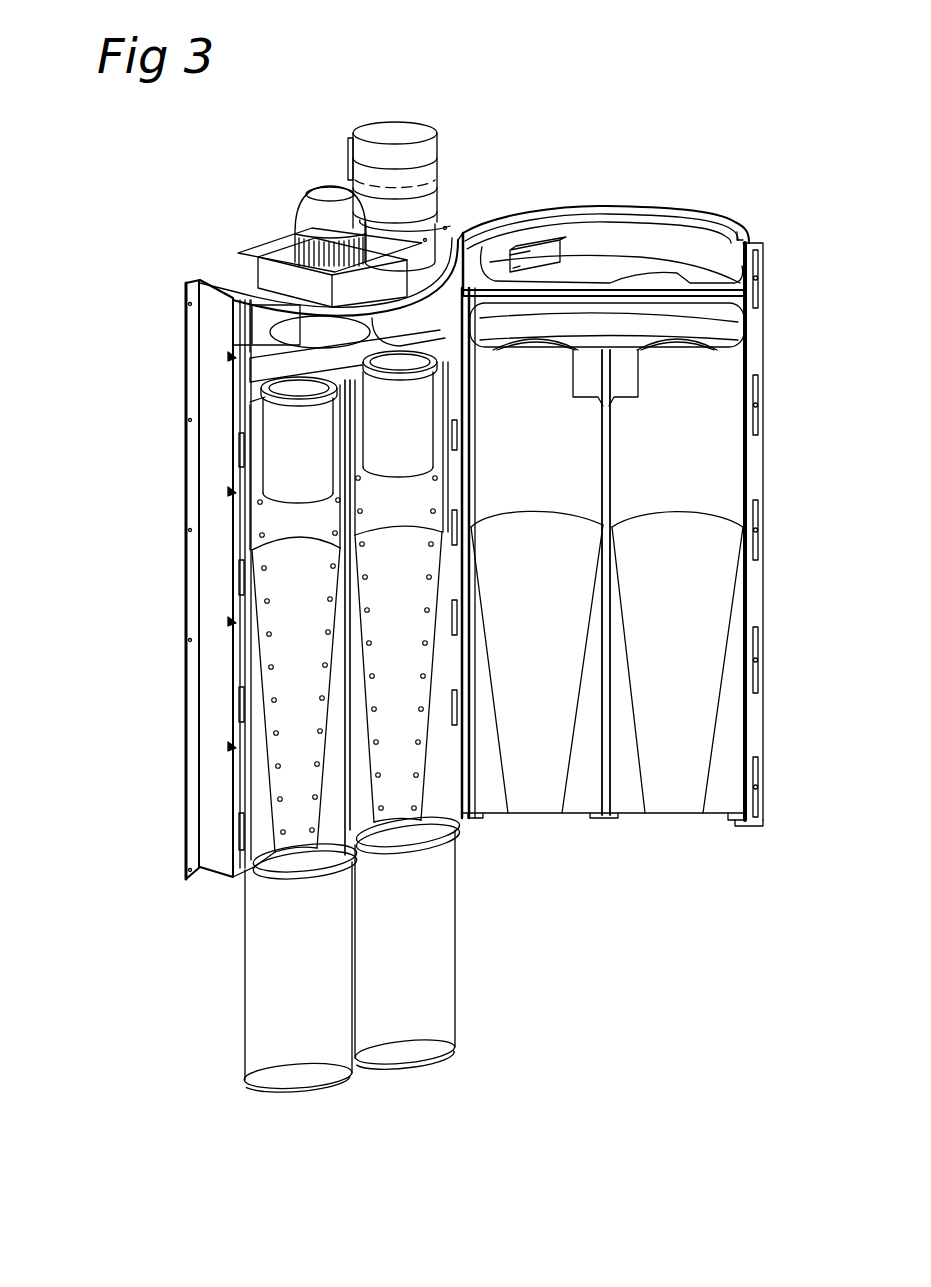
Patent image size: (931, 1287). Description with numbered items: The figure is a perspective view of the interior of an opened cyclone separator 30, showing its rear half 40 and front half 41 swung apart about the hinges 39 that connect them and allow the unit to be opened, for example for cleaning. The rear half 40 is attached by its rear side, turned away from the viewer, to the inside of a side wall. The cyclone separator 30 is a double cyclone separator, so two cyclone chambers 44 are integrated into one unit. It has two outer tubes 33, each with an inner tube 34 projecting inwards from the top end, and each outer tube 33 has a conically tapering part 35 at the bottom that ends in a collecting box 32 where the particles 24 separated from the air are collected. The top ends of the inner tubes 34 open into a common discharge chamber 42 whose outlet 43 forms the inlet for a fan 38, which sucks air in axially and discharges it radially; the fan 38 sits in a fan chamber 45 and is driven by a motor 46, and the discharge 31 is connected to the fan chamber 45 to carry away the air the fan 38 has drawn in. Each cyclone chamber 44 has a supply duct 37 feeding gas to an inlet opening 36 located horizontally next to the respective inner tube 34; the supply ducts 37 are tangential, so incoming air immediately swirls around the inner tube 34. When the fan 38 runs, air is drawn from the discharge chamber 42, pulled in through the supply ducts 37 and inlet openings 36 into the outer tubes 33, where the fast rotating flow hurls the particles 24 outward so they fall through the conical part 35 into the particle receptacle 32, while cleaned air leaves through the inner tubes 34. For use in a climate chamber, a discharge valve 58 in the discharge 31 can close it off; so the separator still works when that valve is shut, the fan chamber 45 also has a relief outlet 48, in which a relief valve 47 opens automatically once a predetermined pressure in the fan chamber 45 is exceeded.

The particles 24 is at (268, 641).
The cyclone separator 30 is at (160, 495).
The discharge 31 is at (428, 170).
The collecting box 32 is at (402, 1038).
The outer tube 33 is at (265, 487).
The inner tube 34 is at (278, 430).
The conically tapering part 35 is at (387, 740).
The inlet opening 36 is at (640, 368).
The supply duct 37 is at (620, 403).
The fan 38 is at (290, 322).
The hinges 39 is at (522, 800).
The rear half 40 is at (236, 292).
The front half 41 is at (718, 224).
The discharge chamber 42 is at (258, 393).
The outlet 43 is at (740, 293).
The cyclone chamber 44 is at (380, 518).
The fan chamber 45 is at (640, 242).
The motor 46 is at (300, 240).
The relief valve 47 is at (545, 248).
The relief outlet 48 is at (520, 258).
The discharge valve 58 is at (353, 176).